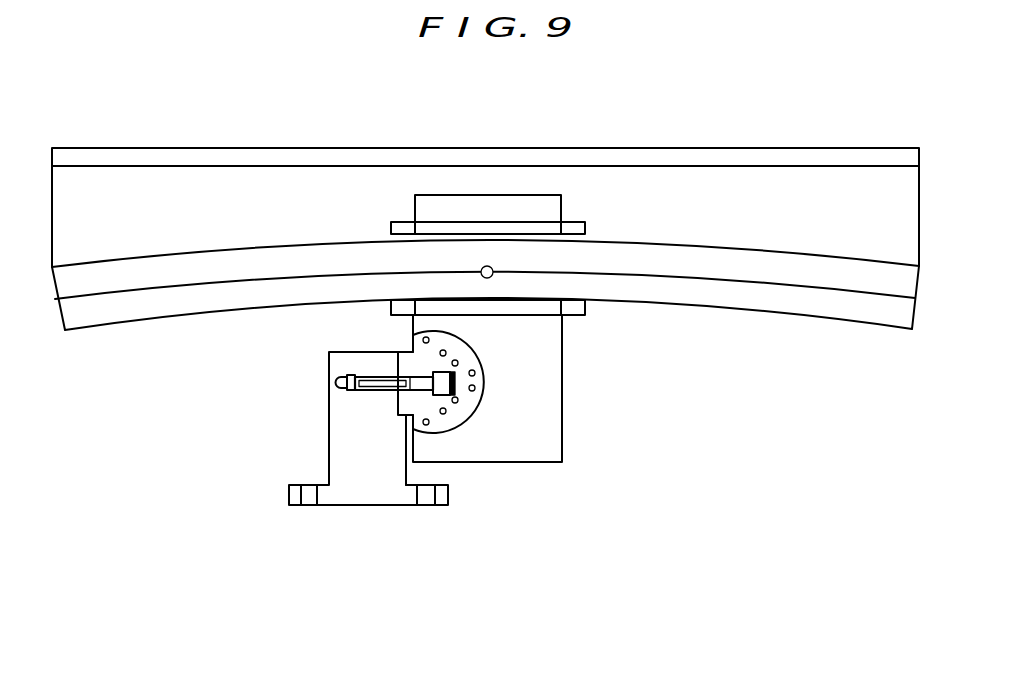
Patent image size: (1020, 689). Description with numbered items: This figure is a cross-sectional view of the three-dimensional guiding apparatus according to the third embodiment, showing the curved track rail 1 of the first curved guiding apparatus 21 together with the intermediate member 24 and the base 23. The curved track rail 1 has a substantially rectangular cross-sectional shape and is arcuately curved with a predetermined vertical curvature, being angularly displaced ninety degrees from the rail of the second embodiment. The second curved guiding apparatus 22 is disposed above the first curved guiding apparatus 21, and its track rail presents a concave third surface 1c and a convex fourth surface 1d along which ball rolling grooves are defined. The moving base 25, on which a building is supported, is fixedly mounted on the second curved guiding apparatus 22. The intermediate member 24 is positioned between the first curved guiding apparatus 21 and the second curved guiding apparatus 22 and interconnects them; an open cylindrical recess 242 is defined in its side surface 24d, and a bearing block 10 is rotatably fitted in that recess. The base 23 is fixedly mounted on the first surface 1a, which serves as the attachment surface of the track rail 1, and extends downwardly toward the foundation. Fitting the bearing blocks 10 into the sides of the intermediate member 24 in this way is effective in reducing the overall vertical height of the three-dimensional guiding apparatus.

The curved track rail 1 is at (808, 303).
The first surface (attachment surface) 1a is at (399, 395).
The concave third surface 1c is at (440, 410).
The convex fourth surface 1d is at (447, 335).
The bearing block 10 is at (578, 222).
The first curved guiding apparatus 21 is at (404, 422).
The second curved guiding apparatus 22 is at (568, 217).
The base 23 is at (348, 442).
The intermediate member 24 is at (540, 415).
The side surface 24d is at (410, 448).
The moving base 25 is at (748, 158).
The open cylindrical recess 242 is at (460, 403).